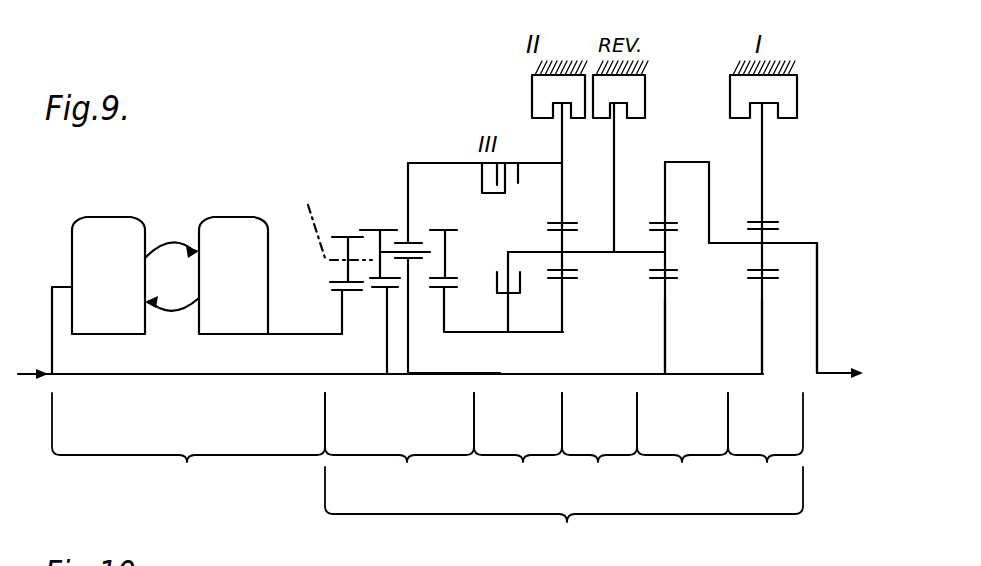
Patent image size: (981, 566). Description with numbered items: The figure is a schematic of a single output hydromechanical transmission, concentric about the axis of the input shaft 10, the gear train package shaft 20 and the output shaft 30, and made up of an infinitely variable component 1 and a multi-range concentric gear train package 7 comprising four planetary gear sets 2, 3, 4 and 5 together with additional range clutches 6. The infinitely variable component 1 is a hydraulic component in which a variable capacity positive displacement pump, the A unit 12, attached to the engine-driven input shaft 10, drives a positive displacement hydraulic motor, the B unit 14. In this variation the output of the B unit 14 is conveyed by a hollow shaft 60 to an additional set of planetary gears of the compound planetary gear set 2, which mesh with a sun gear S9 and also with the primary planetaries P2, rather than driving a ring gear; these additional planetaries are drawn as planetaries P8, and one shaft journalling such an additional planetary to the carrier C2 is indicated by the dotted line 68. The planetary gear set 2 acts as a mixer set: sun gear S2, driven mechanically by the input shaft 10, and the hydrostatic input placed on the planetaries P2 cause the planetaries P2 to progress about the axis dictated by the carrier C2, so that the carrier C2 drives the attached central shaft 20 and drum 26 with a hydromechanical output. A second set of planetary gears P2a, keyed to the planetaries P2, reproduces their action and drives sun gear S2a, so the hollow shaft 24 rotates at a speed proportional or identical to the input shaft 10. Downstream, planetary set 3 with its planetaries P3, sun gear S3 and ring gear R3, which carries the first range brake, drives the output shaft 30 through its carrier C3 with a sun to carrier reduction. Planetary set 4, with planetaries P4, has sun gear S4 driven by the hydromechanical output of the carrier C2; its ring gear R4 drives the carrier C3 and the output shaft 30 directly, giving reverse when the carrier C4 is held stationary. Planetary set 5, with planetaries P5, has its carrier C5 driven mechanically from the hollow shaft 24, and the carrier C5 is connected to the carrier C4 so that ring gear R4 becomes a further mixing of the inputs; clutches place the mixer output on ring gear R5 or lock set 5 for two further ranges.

The infinitely variable component 1 is at (188, 446).
The compound planetary gear set 2 is at (399, 446).
The planetary gear set 3 is at (765, 446).
The planetary gear set 4 is at (682, 446).
The planetary gear set 5 is at (599, 446).
The range clutches 6 is at (518, 446).
The gear train package 7 is at (564, 515).
The input shaft 10 is at (177, 377).
The A unit 12 is at (110, 217).
The B unit 14 is at (232, 217).
The gear train package shaft 20 is at (490, 375).
The hollow shaft 24 is at (473, 333).
The drum 26 is at (443, 163).
The output shaft 30 is at (833, 376).
The hollow shaft 60 is at (298, 334).
The shaft 68 is at (336, 216).
The planetary gears P2 is at (398, 236).
The second set of planetary gears P2a is at (456, 238).
The planetary gears P3 is at (765, 263).
The planetary gears P4 is at (668, 256).
The planetary gears P5 is at (566, 264).
The planet gear P8 is at (330, 276).
The sun gear S2 is at (384, 357).
The sun gear S2a is at (445, 310).
The sun gear S3 is at (765, 333).
The sun gear S4 is at (666, 322).
The sun gear S9 is at (340, 313).
The ring gear R3 is at (764, 178).
The ring gear R4 is at (662, 172).
The ring gear R5 is at (566, 206).
The carrier C2 is at (411, 190).
The carrier C3 is at (790, 242).
The carrier C4 is at (628, 250).
The carrier C5 is at (590, 251).